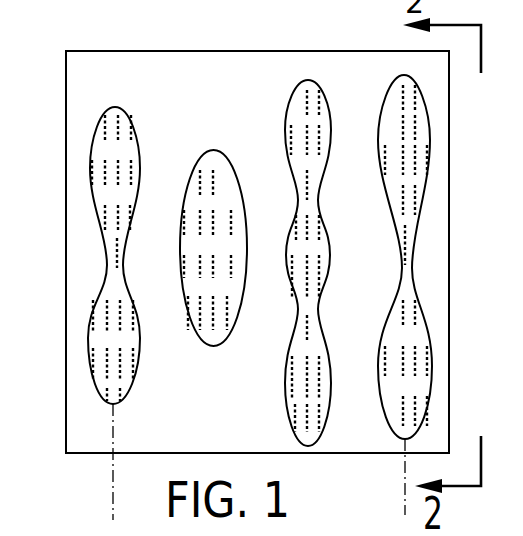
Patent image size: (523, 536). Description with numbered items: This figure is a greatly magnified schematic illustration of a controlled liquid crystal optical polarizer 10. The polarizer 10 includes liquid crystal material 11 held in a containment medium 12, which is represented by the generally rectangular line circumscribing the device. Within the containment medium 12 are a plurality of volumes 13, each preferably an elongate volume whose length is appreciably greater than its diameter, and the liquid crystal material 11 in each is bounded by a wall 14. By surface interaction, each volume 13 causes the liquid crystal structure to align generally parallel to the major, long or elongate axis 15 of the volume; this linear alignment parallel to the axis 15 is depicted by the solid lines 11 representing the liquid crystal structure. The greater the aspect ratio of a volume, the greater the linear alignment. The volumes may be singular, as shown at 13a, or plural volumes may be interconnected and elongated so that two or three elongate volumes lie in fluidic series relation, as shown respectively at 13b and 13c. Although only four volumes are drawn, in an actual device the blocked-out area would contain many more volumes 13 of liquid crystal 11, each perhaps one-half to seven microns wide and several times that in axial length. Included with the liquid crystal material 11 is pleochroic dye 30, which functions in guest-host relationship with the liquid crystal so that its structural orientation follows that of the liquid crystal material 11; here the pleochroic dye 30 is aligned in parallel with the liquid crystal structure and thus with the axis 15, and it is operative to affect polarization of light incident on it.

The controlled liquid crystal optical polarizer 10 is at (48, 118).
The liquid crystal material 11 is at (118, 128).
The containment medium 12 is at (134, 66).
The volume 13 is at (136, 152).
The singular volume 13a is at (224, 164).
The two interconnected elongate volumes 13b is at (138, 381).
The three interconnected elongate volumes 13c is at (294, 418).
The wall 14 is at (96, 198).
The elongate axis 15 is at (112, 493).
The pleochroic dye 30 is at (94, 175).